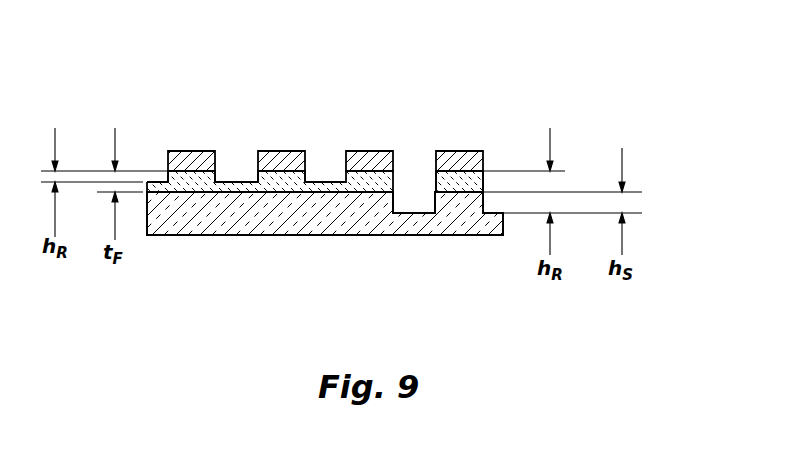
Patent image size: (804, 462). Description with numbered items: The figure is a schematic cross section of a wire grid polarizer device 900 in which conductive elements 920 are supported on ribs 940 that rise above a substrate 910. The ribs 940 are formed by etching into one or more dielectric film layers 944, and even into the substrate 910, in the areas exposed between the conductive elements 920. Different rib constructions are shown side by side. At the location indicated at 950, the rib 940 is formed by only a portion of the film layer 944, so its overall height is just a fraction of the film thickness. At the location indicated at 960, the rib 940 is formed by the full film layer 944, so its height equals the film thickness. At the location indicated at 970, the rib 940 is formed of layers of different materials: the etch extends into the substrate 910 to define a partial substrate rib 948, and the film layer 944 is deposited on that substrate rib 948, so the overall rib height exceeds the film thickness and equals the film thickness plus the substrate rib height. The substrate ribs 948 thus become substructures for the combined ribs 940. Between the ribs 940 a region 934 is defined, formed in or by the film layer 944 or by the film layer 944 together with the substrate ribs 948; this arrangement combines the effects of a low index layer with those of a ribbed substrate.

The polarizer device 900 is at (665, 202).
The substrate 910 is at (504, 237).
The conductive elements 920 is at (462, 165).
The region 934 is at (400, 195).
The ribs 940 is at (428, 193).
The film layers 944 is at (341, 182).
The substrate ribs 948 is at (457, 206).
The rib with height a fraction of film thickness 950 is at (236, 181).
The rib with height equal to film thickness 960 is at (317, 182).
The rib of layers of different materials 970 is at (408, 212).